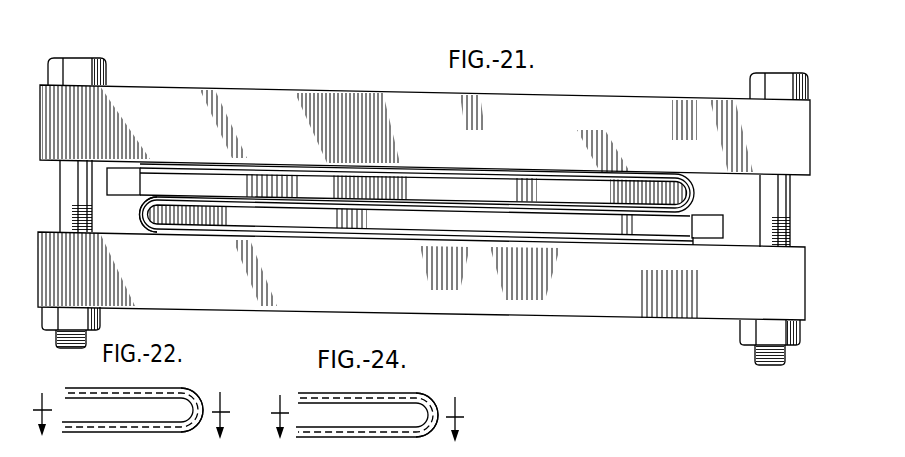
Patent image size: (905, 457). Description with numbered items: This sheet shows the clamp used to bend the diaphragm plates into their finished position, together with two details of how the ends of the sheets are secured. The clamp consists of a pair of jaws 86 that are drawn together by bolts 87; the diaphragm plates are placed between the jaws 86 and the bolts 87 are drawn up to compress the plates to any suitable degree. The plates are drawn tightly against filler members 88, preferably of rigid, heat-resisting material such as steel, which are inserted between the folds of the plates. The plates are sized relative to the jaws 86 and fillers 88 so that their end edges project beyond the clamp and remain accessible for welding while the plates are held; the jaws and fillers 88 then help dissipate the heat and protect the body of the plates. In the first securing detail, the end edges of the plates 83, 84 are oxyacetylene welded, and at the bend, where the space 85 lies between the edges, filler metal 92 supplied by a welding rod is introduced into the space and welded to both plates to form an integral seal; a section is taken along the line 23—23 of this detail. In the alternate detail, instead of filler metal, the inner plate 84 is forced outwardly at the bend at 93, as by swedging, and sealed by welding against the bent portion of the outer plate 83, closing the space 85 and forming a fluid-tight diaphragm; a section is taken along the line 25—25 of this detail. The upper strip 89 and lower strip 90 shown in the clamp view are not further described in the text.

In FIG. 21, the plate 83 is at (420, 170).
In FIG. 22, the plate 83 is at (127, 391).
In FIG. 24, the plate 83 is at (398, 396).
In FIG. 21, the plate 84 is at (450, 178).
In FIG. 22, the plate 84 is at (142, 397).
In FIG. 24, the plate 84 is at (357, 405).
In FIG. 21, the space 85 is at (143, 215).
In FIG. 21, the jaws 86 is at (252, 105).
In FIG. 21, the bolts 87 is at (70, 72).
In FIG. 21, the filler members 88 is at (153, 178).
In FIG. 21, the upper strip 89 is at (157, 160).
In FIG. 21, the lower strip 90 is at (682, 243).
In FIG. 22, the filler metal 92 is at (197, 403).
In FIG. 24, the bend 93 is at (430, 402).
In FIG. 22, the line 23— 23 is at (143, 404).
In FIG. 24, the line 25— 25 is at (385, 407).